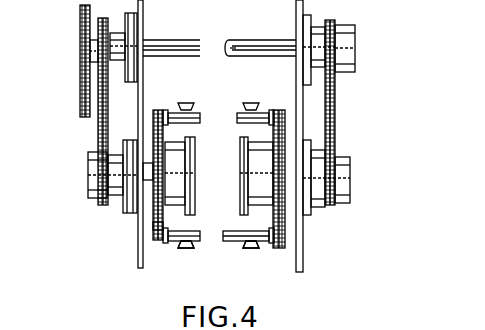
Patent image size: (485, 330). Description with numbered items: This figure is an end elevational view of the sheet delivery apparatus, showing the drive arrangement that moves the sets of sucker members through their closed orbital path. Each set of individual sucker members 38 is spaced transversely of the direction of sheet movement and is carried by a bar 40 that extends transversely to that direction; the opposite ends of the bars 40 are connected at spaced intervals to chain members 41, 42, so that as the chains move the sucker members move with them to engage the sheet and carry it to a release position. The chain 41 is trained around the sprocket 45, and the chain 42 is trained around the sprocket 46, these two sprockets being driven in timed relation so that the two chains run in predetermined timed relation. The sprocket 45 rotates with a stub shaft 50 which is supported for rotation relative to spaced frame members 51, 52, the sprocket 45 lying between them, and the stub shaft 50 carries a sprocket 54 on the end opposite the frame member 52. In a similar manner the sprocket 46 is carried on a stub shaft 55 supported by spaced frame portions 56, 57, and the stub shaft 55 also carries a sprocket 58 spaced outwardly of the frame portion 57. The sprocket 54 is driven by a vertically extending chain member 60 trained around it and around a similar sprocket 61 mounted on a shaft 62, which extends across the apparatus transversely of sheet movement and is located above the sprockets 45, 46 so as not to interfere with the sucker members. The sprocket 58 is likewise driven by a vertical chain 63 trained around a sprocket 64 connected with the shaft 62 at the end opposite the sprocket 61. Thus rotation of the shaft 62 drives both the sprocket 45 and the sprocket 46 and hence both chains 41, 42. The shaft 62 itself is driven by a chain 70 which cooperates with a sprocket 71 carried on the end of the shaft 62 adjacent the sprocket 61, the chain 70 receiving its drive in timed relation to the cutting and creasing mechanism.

The sucker member 38 is at (184, 250).
The bar 40 is at (197, 116).
The chain member 41 is at (157, 226).
The chain member 42 is at (283, 233).
The sprocket 45 is at (157, 214).
The sprocket 46 is at (281, 221).
The stub shaft 50 is at (116, 206).
The frame member 51 is at (139, 120).
The frame member 52 is at (191, 152).
The sprocket 54 is at (96, 170).
The stub shaft 55 is at (330, 150).
The frame portion 56 is at (245, 190).
The frame portion 57 is at (300, 114).
The sprocket 58 is at (350, 186).
The chain member 60 is at (112, 60).
The sprocket 61 is at (93, 26).
The shaft 62 is at (226, 52).
The chain 63 is at (337, 86).
The sprocket 64 is at (356, 48).
The chain 70 is at (89, 80).
The sprocket 71 is at (91, 51).